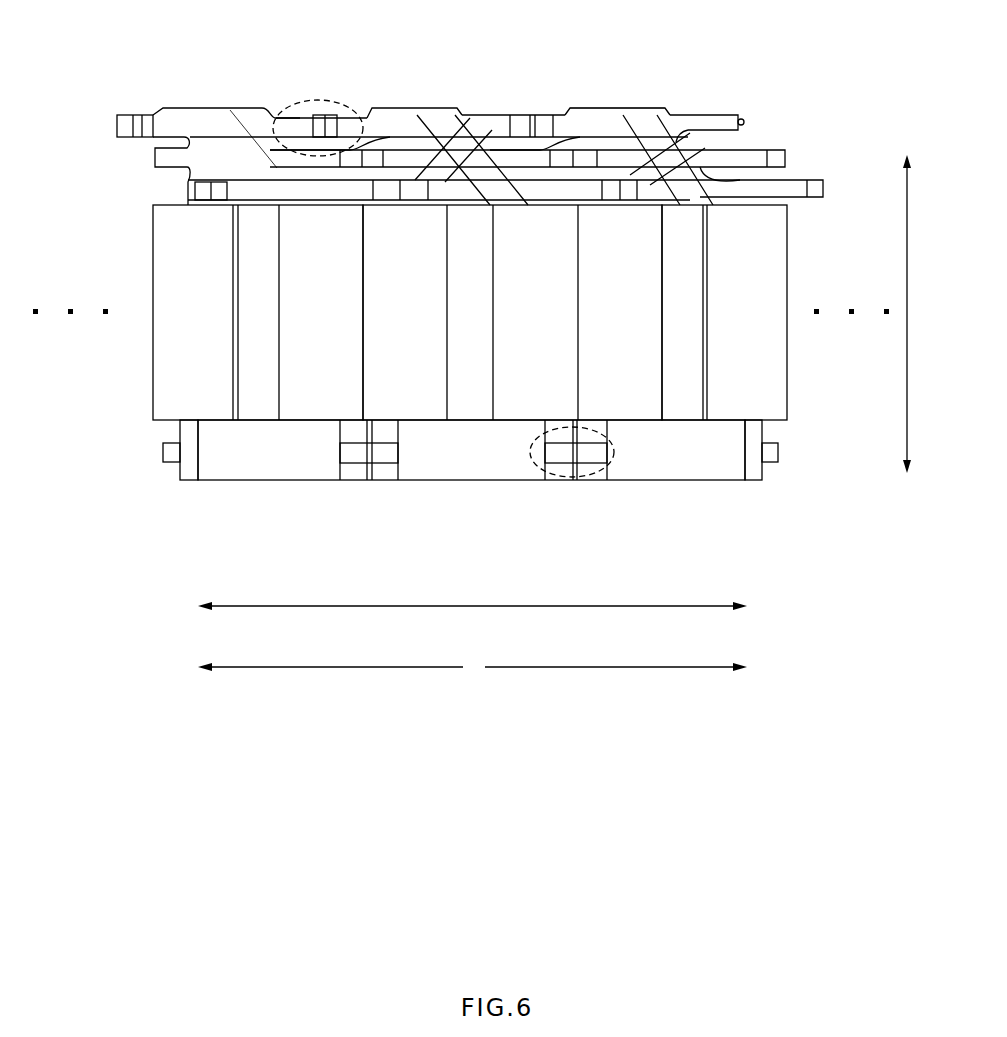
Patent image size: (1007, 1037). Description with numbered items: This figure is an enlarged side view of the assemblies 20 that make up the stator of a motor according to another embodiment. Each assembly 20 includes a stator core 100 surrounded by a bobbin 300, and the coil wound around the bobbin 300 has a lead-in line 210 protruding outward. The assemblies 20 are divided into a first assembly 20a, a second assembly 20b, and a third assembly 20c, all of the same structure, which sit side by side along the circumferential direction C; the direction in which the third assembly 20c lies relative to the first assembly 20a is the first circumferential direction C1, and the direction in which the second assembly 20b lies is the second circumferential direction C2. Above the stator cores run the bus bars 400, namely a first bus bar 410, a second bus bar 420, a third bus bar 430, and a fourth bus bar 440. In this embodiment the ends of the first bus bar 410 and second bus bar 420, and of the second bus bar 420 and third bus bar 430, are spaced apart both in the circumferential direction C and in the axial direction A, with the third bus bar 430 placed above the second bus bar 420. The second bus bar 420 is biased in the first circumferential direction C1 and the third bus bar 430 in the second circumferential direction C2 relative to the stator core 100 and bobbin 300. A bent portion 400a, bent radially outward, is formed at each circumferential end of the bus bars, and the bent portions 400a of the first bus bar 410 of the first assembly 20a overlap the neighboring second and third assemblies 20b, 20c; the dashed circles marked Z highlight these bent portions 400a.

The assemblies 20 is at (531, 404).
The first assembly 20a is at (480, 496).
The second assembly 20b is at (280, 486).
The third assembly 20c is at (660, 497).
The stator core 100 is at (720, 466).
The lead-in line 210 is at (551, 112).
The bobbin 300 is at (178, 113).
The bus bars 400 is at (513, 369).
The bent portion 400a is at (295, 112).
The first bus bar 410 is at (390, 112).
The second bus bar 420 is at (513, 112).
The third bus bar 430 is at (478, 112).
The fourth bus bar 440 is at (186, 454).
The enlarged region Z is at (305, 100).
The axial direction A is at (908, 302).
The circumferential direction C is at (445, 607).
The first circumferential direction C1 is at (608, 668).
The second circumferential direction C2 is at (339, 668).